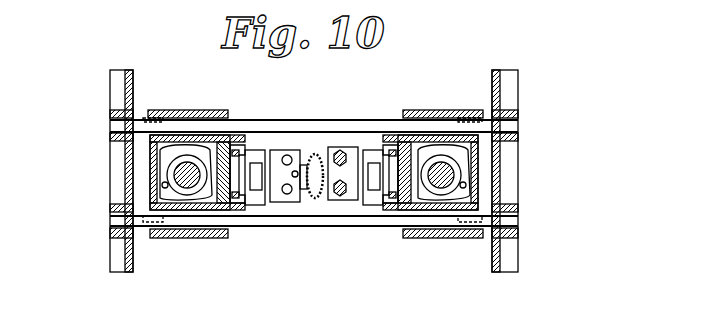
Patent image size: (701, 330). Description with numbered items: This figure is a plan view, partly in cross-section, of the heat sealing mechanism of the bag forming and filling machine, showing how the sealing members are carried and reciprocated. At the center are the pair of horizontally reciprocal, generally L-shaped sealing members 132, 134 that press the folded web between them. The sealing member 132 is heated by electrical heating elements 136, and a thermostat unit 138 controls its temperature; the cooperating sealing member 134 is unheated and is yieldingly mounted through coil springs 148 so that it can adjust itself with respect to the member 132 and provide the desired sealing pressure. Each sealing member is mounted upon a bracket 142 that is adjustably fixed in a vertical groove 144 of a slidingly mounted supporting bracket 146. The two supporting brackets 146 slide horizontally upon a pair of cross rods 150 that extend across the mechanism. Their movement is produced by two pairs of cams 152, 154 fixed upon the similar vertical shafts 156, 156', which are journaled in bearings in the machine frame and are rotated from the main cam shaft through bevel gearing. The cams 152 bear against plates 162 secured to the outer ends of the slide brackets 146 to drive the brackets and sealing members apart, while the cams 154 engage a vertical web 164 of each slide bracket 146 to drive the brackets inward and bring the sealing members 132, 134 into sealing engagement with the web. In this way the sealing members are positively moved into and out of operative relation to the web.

The sealing member 132 is at (295, 150).
The sealing member 134 is at (333, 222).
The electrical heating elements 136 is at (265, 206).
The thermostat unit 138 is at (300, 203).
The bracket 142 is at (267, 150).
The vertical groove 144 is at (217, 110).
The supporting bracket 146 is at (170, 238).
The coil springs 148 is at (357, 148).
The cross rods 150 is at (318, 120).
The cam 152 is at (155, 200).
The cam 154 is at (168, 150).
The vertical shaft 156 is at (514, 172).
The vertical shaft 156' is at (123, 172).
The plate 162 is at (162, 182).
The vertical web 164 is at (245, 142).